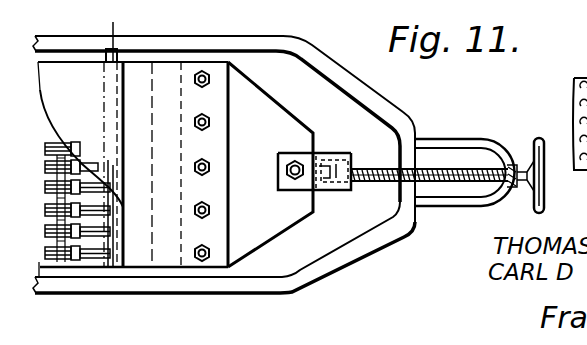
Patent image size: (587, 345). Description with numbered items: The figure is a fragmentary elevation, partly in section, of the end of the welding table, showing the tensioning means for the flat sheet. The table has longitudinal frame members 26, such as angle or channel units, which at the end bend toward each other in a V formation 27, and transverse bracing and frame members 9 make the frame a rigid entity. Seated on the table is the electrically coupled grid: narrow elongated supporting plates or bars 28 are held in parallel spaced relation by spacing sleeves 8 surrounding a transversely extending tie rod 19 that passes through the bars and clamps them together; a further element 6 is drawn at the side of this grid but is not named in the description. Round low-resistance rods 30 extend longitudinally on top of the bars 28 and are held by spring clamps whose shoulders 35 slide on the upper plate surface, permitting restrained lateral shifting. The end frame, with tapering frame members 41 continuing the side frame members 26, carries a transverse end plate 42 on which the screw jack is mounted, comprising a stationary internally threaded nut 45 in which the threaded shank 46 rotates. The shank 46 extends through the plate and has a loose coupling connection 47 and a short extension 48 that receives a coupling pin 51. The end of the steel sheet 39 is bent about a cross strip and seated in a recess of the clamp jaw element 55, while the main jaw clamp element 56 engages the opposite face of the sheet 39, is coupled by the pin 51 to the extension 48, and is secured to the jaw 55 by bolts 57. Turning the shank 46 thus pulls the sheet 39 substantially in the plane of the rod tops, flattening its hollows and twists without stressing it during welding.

The lower roller bearing 6 is at (45, 220).
The spacing sleeves 8 is at (45, 171).
The transverse bracing and frame members 9 is at (106, 33).
The tie rod 19 is at (60, 266).
The longitudinal frame members 26 is at (138, 36).
The V formation 27 is at (302, 164).
The supporting plates or bars 28 is at (44, 250).
The rods 30 is at (115, 232).
The shoulders 35 is at (93, 152).
The sheet of steel 39 is at (133, 169).
The tapering frame members 41 is at (380, 100).
The transverse end plate 42 is at (408, 193).
The nut 45 is at (513, 158).
The threaded shank 46 is at (453, 172).
The loose coupling connection 47 is at (356, 188).
The short extension 48 is at (297, 192).
The coupling pin 51 is at (300, 153).
The clamp jaw element 55 is at (172, 102).
The main jaw clamp element 56 is at (265, 177).
The bolts 57 is at (187, 163).